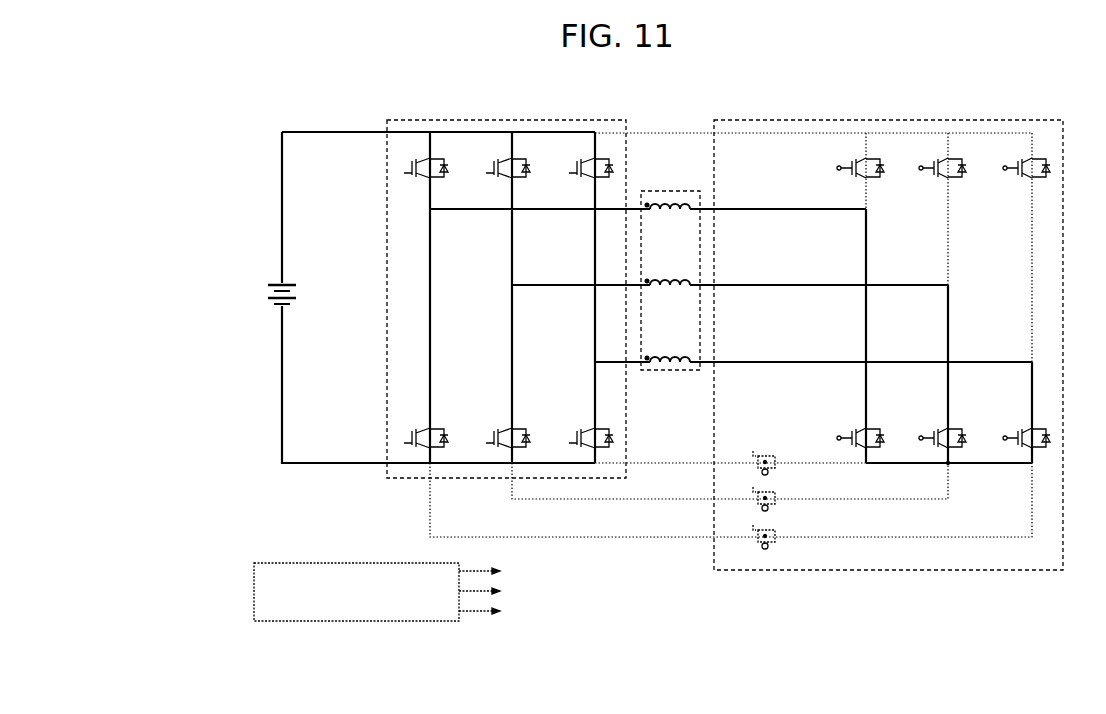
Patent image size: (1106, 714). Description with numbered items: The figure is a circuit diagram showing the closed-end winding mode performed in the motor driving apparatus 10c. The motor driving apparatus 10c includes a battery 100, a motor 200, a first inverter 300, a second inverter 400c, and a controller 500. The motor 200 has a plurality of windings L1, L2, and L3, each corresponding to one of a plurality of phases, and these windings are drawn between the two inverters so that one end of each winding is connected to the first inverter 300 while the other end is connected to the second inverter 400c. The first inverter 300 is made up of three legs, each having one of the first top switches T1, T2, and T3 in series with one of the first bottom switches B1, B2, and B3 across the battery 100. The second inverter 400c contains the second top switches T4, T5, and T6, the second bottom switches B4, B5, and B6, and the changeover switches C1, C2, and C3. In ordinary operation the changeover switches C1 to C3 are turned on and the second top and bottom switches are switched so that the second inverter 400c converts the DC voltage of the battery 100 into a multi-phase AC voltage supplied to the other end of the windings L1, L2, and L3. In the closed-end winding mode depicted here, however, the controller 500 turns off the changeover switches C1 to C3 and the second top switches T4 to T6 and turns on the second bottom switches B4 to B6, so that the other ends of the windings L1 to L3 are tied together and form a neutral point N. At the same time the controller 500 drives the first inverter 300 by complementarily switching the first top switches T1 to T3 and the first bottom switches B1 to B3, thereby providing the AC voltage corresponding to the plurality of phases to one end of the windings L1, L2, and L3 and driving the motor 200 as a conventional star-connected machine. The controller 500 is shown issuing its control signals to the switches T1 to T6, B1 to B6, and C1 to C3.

The motor driving apparatus 10c is at (300, 101).
The battery 100 is at (270, 284).
The motor 200 is at (662, 191).
The first inverter 300 is at (527, 120).
The second inverter 400c is at (888, 120).
The controller 500 is at (254, 591).
The first top switch T1 is at (426, 177).
The first top switch T2 is at (508, 177).
The first top switch T3 is at (591, 177).
The second top switch T4 is at (860, 175).
The second top switch T5 is at (942, 175).
The second top switch T6 is at (1025, 175).
The first bottom switch B1 is at (426, 431).
The first bottom switch B2 is at (508, 431).
The first bottom switch B3 is at (591, 431).
The second bottom switch B4 is at (860, 431).
The second bottom switch B5 is at (942, 431).
The second bottom switch B6 is at (1026, 431).
The winding L1 is at (668, 217).
The winding L2 is at (668, 292).
The winding L3 is at (668, 353).
The changeover switch C1 is at (777, 463).
The changeover switch C2 is at (777, 500).
The changeover switch C3 is at (777, 538).
The neutral point N is at (956, 471).